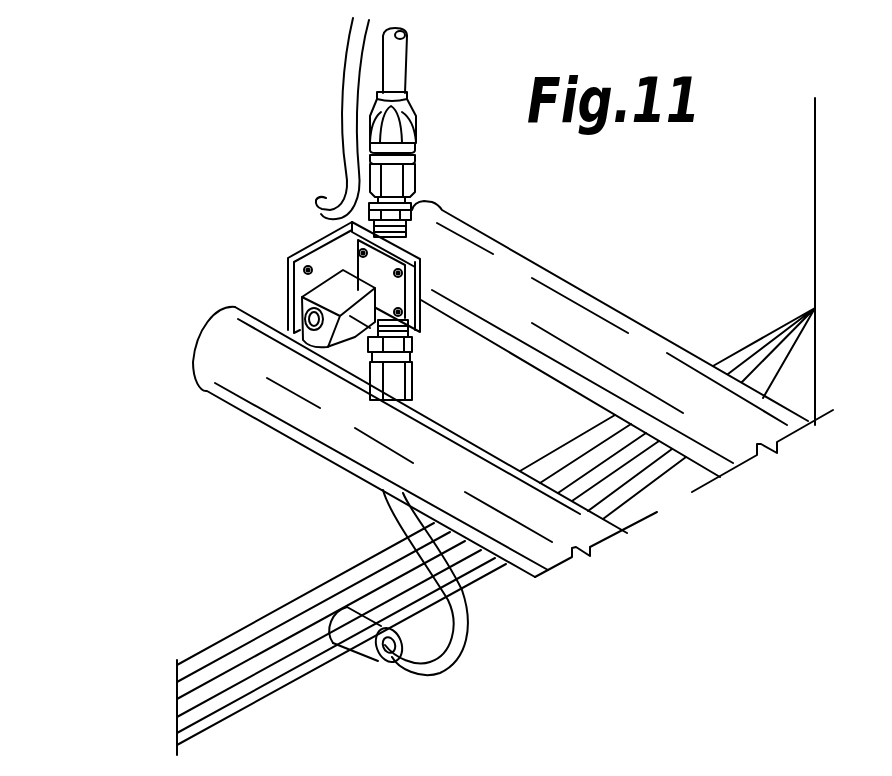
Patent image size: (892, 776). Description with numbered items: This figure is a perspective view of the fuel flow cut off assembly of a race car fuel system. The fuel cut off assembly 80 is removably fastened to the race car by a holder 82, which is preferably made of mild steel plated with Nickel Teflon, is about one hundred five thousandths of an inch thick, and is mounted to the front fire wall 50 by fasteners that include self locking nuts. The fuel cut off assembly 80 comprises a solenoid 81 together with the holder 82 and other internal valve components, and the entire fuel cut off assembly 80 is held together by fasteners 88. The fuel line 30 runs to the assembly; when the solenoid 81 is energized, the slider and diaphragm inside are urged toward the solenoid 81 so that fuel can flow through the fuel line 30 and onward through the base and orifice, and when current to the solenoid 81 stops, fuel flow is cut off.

The fuel line 30 is at (410, 62).
The front fire wall 50 is at (233, 474).
The fuel cut off assembly 80 is at (282, 281).
The solenoid 81 is at (413, 357).
The holder 82 is at (307, 245).
The fasteners 88 is at (322, 334).